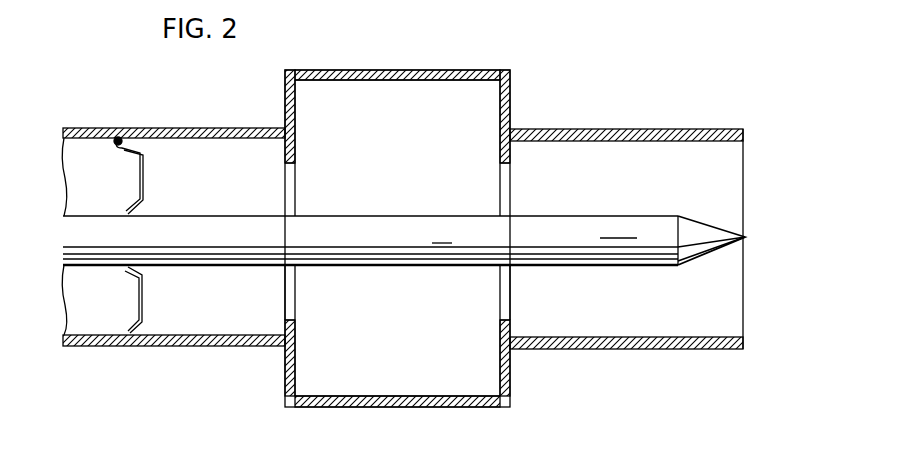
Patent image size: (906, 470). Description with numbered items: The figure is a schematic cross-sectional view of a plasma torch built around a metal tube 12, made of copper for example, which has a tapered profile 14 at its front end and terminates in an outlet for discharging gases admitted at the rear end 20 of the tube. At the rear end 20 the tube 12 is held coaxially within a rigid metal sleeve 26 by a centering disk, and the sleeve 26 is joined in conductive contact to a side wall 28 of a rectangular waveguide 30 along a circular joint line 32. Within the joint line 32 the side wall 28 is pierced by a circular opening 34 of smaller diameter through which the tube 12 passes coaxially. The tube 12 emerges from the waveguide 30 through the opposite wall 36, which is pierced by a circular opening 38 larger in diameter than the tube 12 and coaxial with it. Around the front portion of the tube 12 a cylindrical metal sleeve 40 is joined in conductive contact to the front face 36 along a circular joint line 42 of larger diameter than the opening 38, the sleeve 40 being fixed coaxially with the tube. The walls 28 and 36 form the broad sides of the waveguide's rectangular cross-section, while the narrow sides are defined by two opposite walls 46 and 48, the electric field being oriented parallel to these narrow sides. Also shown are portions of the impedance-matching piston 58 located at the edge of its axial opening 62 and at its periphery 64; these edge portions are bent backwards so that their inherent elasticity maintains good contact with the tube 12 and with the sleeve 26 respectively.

The metal tube 12 is at (413, 220).
The tapered profile 14 is at (705, 243).
The rear end 20 is at (72, 268).
The rigid metal sleeve 26 is at (167, 128).
The side wall 28 is at (285, 96).
The rectangular waveguide 30 is at (290, 414).
The circular joint line 32 is at (283, 345).
The circular opening 34 is at (295, 320).
The wall 36 is at (510, 108).
The circular opening 38 is at (500, 320).
The cylindrical metal sleeve 40 is at (680, 349).
The circular joint line 42 is at (510, 348).
The wall 46 is at (418, 410).
The wall 48 is at (367, 70).
The impedance-matching piston 58 is at (140, 300).
The axial opening 62 is at (126, 203).
The periphery 64 is at (120, 128).